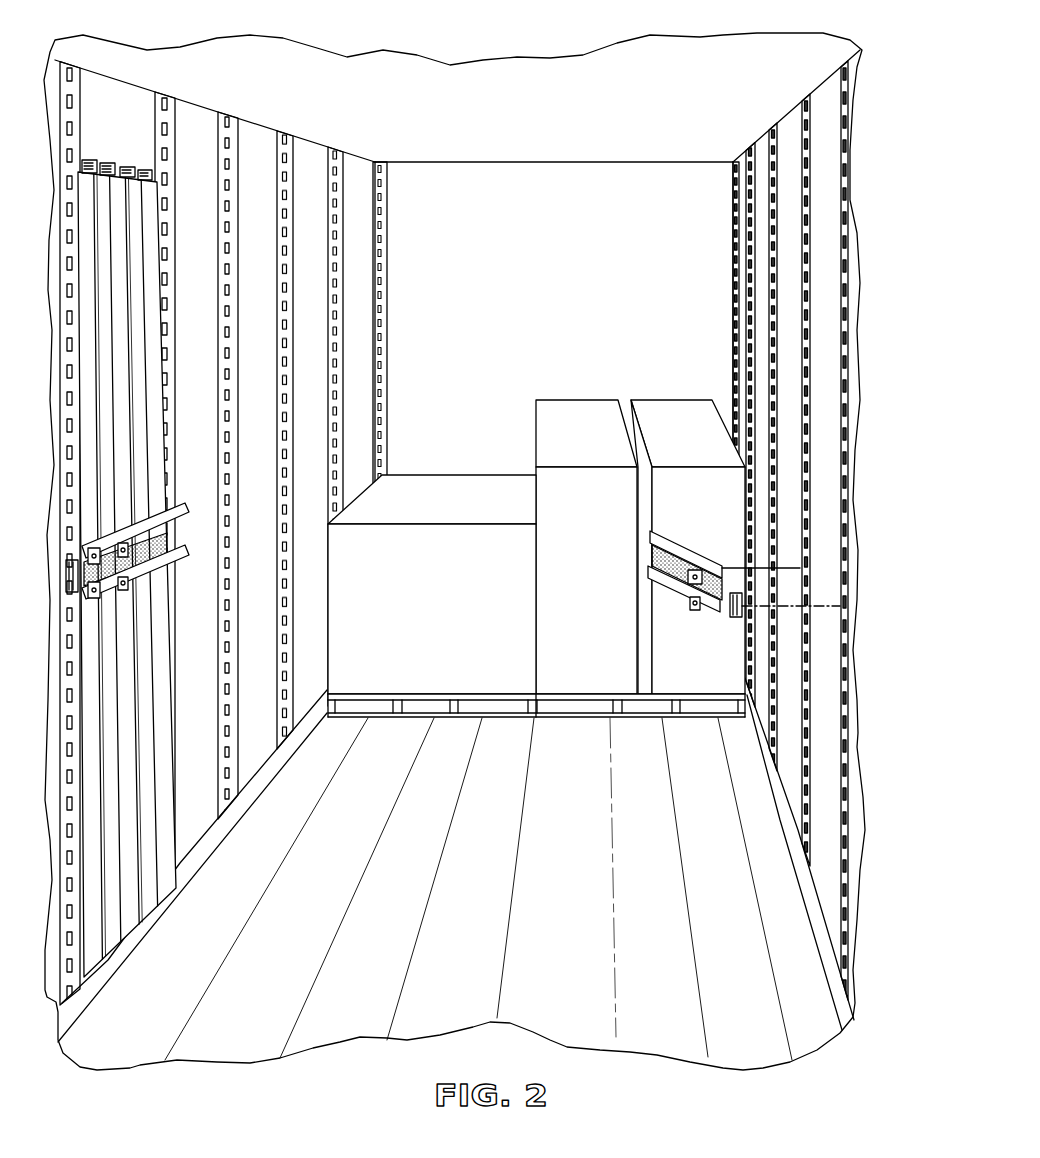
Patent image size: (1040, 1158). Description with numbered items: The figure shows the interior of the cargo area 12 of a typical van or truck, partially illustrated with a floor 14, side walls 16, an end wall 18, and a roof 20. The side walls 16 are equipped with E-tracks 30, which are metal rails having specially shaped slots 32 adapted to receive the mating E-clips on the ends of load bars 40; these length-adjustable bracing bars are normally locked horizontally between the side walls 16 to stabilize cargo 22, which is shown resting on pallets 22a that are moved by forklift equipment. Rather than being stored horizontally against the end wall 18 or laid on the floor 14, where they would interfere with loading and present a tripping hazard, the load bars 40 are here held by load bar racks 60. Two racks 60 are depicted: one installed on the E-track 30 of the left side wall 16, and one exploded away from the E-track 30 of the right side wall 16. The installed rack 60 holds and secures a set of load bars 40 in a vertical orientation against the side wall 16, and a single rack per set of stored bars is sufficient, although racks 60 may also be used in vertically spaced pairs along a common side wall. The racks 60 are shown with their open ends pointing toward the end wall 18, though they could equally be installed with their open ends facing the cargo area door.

The cargo area 12 is at (398, 46).
The floor 14 is at (364, 995).
The side walls 16 is at (267, 275).
The end wall 18 is at (583, 187).
The roof 20 is at (495, 86).
The cargo 22 is at (447, 565).
The pallets 22a is at (438, 718).
The E-tracks 30 is at (295, 223).
The slots 32 is at (233, 682).
The load bars 40 is at (165, 782).
The load bar racks 60 is at (195, 571).